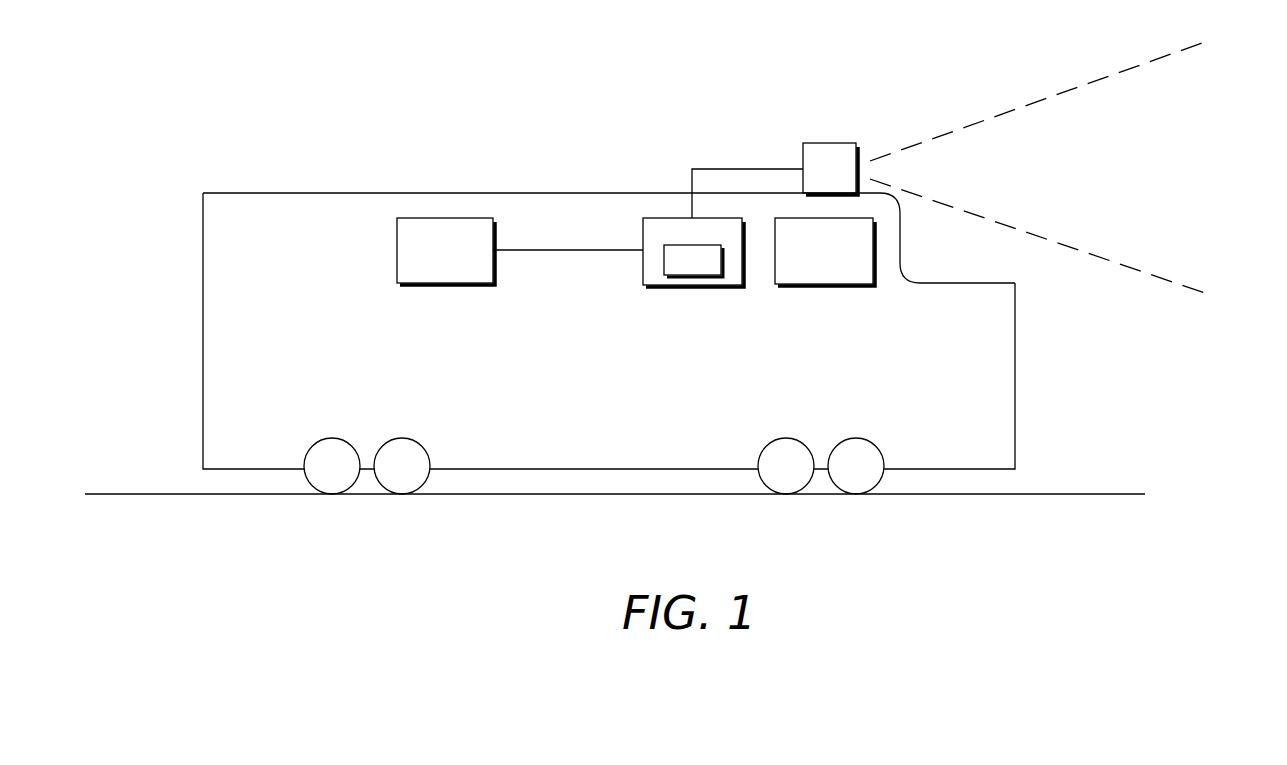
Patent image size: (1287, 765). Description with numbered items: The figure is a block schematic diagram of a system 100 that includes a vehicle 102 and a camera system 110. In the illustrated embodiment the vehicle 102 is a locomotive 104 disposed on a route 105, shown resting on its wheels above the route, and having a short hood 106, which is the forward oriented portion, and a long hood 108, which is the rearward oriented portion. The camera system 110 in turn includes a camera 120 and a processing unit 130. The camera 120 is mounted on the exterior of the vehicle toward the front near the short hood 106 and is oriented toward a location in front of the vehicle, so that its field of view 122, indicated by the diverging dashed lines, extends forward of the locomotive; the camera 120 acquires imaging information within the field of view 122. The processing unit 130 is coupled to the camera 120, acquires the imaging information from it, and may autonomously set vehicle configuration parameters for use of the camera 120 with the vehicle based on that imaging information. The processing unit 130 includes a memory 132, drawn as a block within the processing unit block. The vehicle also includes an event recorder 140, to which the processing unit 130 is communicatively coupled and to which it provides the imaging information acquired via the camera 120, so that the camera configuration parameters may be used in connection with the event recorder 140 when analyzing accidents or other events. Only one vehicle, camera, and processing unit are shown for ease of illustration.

The system 100 is at (1076, 52).
The vehicle 102 is at (253, 190).
The locomotive 104 is at (299, 192).
The route 105 is at (171, 497).
The short hood 106 is at (936, 274).
The long hood 108 is at (352, 160).
The camera system 110 is at (643, 132).
The camera 120 is at (830, 169).
The field of view 122 is at (1180, 137).
The processing unit 130 is at (643, 229).
The memory 132 is at (693, 277).
The event recorder 140 is at (520, 251).